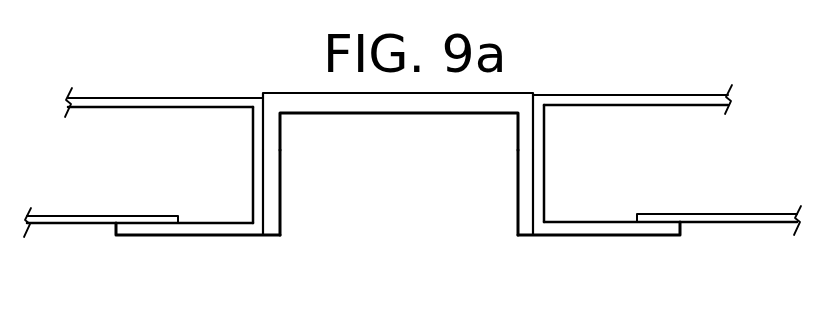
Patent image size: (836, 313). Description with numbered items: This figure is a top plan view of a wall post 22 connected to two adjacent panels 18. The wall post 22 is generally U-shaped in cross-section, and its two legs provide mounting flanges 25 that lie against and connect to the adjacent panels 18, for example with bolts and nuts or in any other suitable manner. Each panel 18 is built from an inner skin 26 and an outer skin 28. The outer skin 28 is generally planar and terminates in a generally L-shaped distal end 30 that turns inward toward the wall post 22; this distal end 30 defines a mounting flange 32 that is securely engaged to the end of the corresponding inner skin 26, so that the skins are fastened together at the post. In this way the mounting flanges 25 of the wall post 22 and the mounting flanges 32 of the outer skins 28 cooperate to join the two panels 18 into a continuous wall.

The panel 18 is at (412, 161).
The wall post 22 is at (423, 100).
The mounting flange 25 is at (279, 205).
The inner skin 26 is at (77, 220).
The outer skin 28 is at (177, 98).
The L-shaped distal end 30 is at (253, 153).
The mounting flange 32 is at (214, 226).